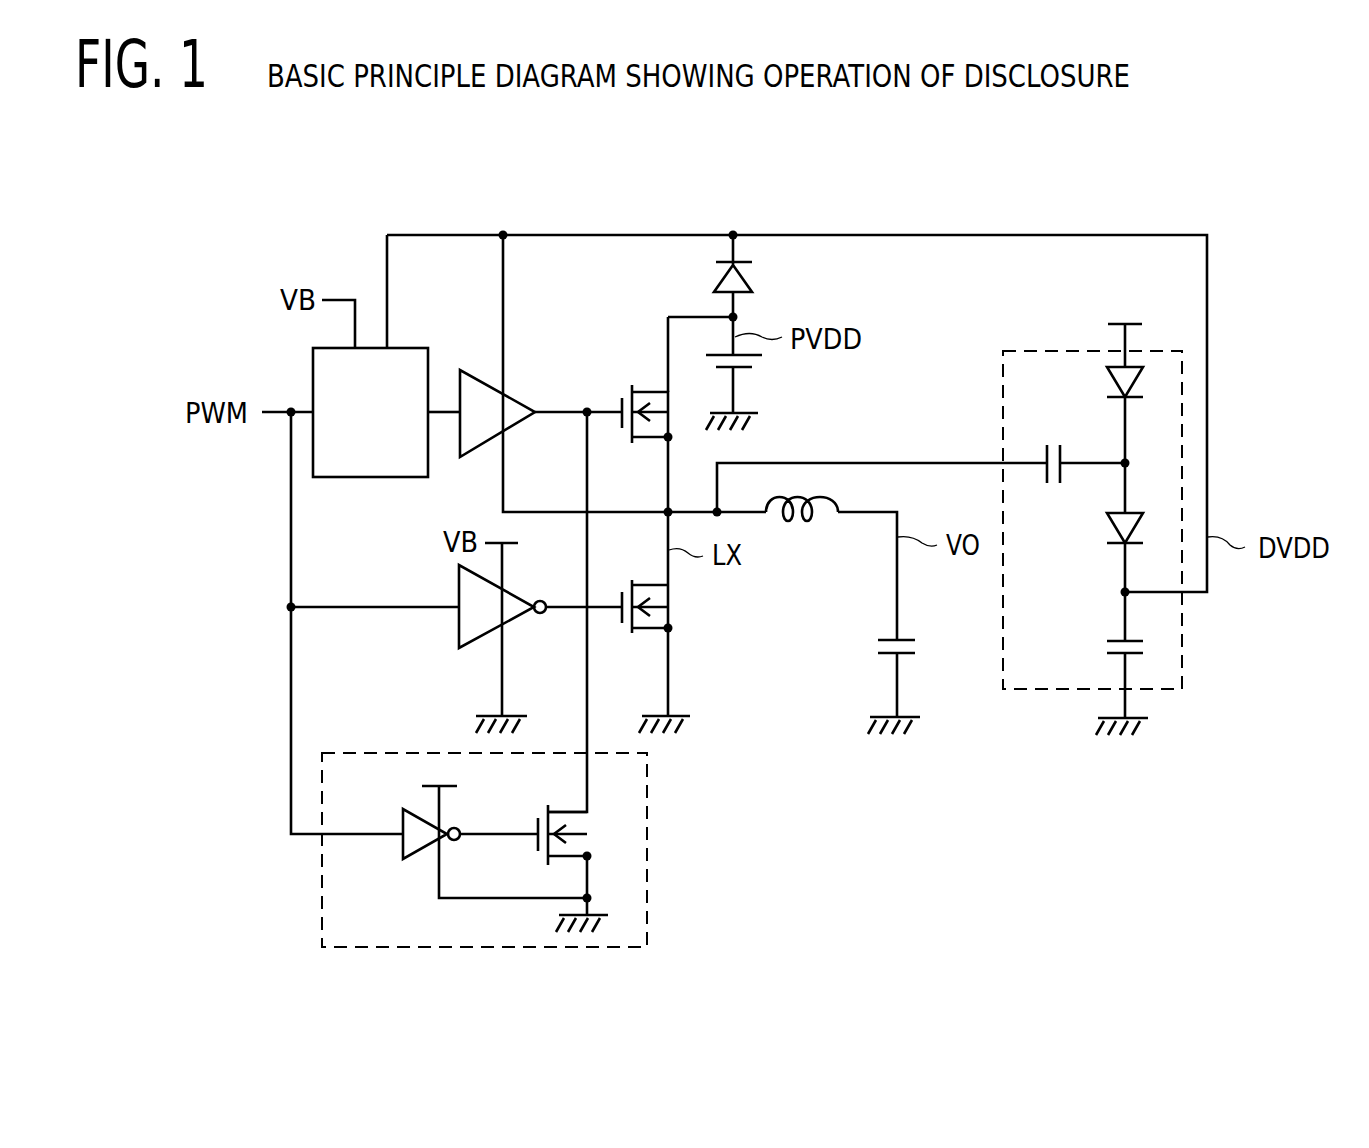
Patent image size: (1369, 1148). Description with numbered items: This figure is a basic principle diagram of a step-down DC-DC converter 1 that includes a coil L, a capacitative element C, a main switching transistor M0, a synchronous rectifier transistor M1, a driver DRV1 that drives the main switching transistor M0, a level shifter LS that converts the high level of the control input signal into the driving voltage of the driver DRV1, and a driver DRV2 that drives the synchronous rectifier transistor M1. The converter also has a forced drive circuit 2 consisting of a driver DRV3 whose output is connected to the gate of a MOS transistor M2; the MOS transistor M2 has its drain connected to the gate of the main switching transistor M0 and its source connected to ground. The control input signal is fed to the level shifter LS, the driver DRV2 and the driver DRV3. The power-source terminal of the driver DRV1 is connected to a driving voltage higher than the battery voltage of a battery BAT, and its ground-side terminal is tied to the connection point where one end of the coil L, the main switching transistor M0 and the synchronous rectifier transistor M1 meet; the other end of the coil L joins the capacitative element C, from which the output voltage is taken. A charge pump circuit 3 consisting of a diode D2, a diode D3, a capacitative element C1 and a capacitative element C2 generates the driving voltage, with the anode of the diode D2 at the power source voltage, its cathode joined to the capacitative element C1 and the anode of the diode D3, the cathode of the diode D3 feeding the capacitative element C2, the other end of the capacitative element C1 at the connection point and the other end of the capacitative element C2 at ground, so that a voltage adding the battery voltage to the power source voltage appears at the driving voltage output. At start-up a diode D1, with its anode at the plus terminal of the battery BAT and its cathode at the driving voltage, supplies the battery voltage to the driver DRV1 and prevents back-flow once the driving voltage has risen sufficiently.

The step-down DC-DC converter 1 is at (1080, 222).
The forced drive circuit 2 is at (522, 850).
The charge pump circuit 3 is at (1128, 520).
The level shifter LS is at (347, 467).
The driver DRV1 is at (562, 380).
The driver DRV2 is at (478, 645).
The driver DRV3 is at (413, 858).
The main switching transistor M0 is at (647, 387).
The synchronous rectifier transistor M1 is at (645, 633).
The MOS transistor M2 is at (573, 808).
The diode D1 is at (752, 281).
The diode D2 is at (1105, 381).
The diode D3 is at (1105, 527).
The capacitative element C1 is at (1081, 447).
The capacitative element C2 is at (1108, 684).
The capacitative element C is at (886, 687).
The coil L is at (802, 532).
The battery BAT is at (748, 370).